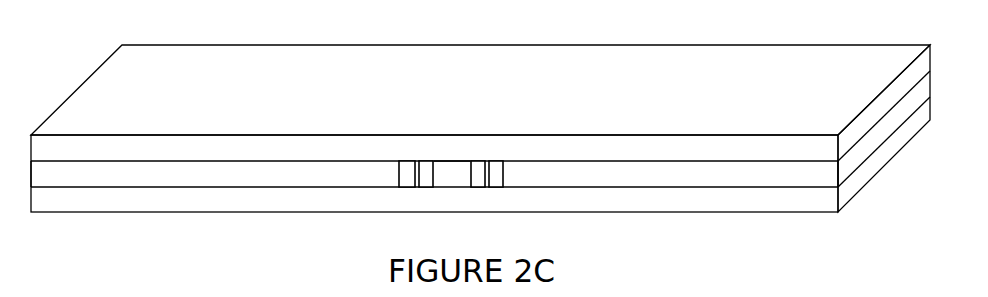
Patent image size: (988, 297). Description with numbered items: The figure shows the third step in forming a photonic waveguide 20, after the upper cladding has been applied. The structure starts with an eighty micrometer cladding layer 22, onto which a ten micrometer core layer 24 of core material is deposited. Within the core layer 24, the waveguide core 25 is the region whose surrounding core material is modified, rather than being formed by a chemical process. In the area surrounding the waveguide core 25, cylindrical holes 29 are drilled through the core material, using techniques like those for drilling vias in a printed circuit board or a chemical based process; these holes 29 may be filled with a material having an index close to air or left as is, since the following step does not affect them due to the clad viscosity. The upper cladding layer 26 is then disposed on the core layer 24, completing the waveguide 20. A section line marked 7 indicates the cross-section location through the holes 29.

The photonic waveguide 20 is at (320, 45).
The cladding layer 22 is at (696, 200).
The core layer 24 is at (818, 172).
The waveguide core 25 is at (440, 161).
The upper cladding layer 26 is at (690, 58).
The cylindrical holes 29 is at (425, 161).
The section line 7- 7 is at (457, 228).